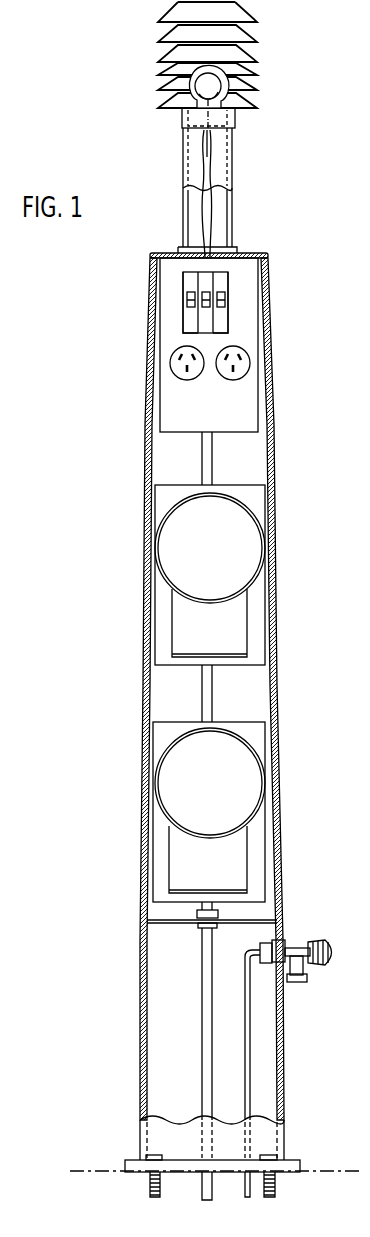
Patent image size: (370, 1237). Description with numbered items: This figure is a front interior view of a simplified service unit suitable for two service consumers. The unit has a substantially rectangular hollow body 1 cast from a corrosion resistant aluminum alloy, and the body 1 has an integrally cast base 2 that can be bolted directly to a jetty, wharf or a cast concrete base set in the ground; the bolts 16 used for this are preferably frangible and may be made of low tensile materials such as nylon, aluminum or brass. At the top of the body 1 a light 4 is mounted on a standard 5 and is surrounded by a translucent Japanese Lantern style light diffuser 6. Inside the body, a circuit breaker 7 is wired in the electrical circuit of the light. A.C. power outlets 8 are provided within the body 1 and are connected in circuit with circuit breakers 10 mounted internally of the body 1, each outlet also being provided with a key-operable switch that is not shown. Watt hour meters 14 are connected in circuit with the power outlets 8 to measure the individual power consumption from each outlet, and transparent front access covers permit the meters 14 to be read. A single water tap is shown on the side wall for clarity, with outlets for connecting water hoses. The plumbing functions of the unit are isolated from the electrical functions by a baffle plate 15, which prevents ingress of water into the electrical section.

The hollow body 1 is at (148, 457).
The base 2 is at (290, 1167).
The light 4 is at (208, 88).
The standard 5 is at (232, 213).
The light diffuser 6 is at (237, 33).
The circuit breaker 7 is at (223, 296).
The A.C. power outlets 8 is at (177, 368).
The circuit breakers 10 is at (190, 320).
The watt hour meters 14 is at (238, 550).
The baffle plate 15 is at (172, 921).
The bolts 16 is at (148, 1178).